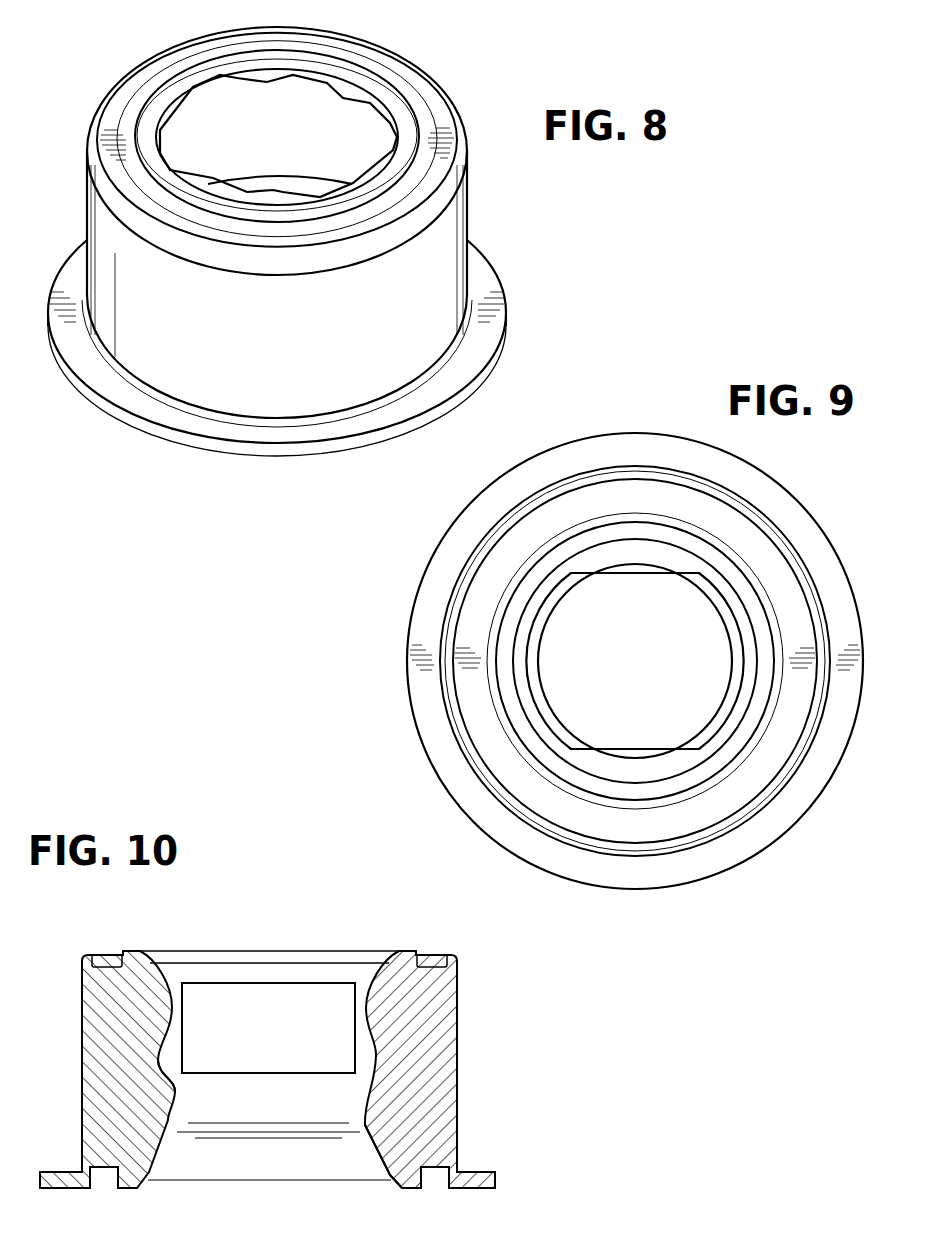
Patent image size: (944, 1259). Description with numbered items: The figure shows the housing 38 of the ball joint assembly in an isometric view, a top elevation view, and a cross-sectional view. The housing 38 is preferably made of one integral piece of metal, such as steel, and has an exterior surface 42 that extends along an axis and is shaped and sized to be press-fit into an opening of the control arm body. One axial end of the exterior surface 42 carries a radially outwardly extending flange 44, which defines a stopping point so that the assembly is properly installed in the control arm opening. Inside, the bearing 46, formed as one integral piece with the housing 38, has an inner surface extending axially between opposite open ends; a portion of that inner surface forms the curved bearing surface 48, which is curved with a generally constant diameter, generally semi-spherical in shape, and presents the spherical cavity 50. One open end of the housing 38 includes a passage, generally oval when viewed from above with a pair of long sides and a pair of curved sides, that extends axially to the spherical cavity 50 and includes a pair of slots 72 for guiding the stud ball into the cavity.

In FIG. 8, the housing 38 is at (78, 221).
In FIG. 9, the housing 38 is at (784, 481).
In FIG. 10, the housing 38 is at (271, 943).
In FIG. 8, the exterior surface 42 is at (447, 229).
In FIG. 10, the exterior surface 42 is at (458, 1060).
In FIG. 8, the flange 44 is at (483, 283).
In FIG. 9, the flange 44 is at (830, 750).
In FIG. 10, the flange 44 is at (480, 1180).
In FIG. 10, the bearing 46 is at (393, 1138).
In FIG. 10, the curved bearing surface 48 is at (173, 1087).
In FIG. 10, the spherical cavity 50 is at (288, 1107).
In FIG. 8, the slots 72 is at (183, 112).
In FIG. 9, the slots 72 is at (737, 648).
In FIG. 10, the slots 72 is at (208, 1002).